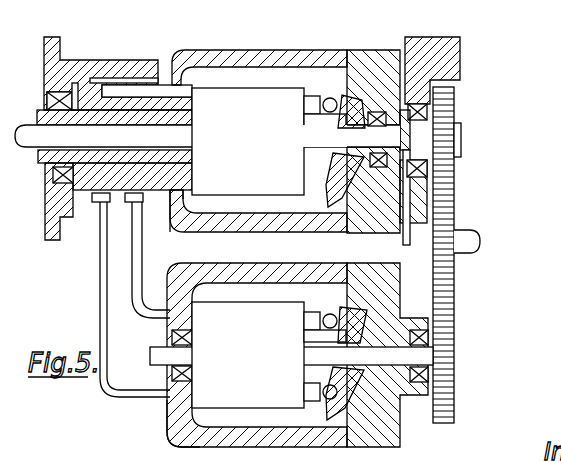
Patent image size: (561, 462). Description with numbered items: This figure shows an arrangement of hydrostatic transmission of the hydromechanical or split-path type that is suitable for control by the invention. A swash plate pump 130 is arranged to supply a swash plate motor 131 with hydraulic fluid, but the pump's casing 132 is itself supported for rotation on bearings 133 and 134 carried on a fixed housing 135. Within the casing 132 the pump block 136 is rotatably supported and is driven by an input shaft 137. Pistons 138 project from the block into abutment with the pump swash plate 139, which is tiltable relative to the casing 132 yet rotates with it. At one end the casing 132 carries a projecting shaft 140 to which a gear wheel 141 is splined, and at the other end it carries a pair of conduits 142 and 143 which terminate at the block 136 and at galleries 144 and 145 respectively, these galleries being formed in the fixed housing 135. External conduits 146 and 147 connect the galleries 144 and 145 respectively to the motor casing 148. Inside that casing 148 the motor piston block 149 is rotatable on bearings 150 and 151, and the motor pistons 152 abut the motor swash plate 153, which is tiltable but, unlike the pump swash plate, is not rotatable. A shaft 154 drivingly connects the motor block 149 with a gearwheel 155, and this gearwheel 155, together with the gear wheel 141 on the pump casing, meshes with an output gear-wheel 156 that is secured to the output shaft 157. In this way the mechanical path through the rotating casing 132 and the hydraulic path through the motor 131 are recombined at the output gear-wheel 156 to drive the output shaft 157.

The swash plate pump 130 is at (203, 46).
The swash plate motor 131 is at (166, 437).
The casing 132 is at (363, 57).
The bearing 133 is at (63, 92).
The bearing 134 is at (430, 172).
The fixed housing 135 is at (108, 60).
The pump block 136 is at (226, 88).
The input shaft 137 is at (40, 148).
The pistons 138 is at (313, 92).
The pump swash plate 139 is at (348, 96).
The projecting shaft 140 is at (461, 138).
The gear wheel 141 is at (455, 116).
The conduit 142 is at (134, 92).
The conduit 143 is at (182, 185).
The gallery 144 is at (110, 212).
The gallery 145 is at (100, 262).
The external conduit 146 is at (100, 303).
The external conduit 147 is at (132, 275).
The motor casing 148 is at (170, 413).
The motor piston block 149 is at (251, 365).
The bearing 150 is at (180, 373).
The bearing 151 is at (455, 372).
The motor pistons 152 is at (318, 320).
The motor swash plate 153 is at (318, 394).
The shaft 154 is at (457, 352).
The gearwheel 155 is at (455, 330).
The output gear-wheel 156 is at (455, 205).
The output shaft 157 is at (468, 230).